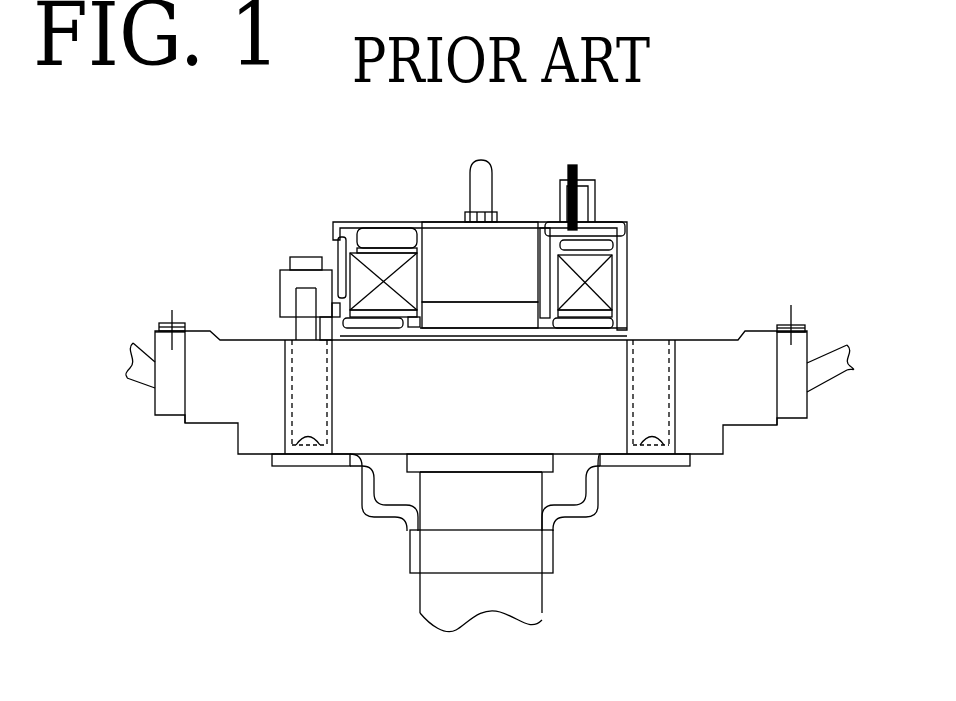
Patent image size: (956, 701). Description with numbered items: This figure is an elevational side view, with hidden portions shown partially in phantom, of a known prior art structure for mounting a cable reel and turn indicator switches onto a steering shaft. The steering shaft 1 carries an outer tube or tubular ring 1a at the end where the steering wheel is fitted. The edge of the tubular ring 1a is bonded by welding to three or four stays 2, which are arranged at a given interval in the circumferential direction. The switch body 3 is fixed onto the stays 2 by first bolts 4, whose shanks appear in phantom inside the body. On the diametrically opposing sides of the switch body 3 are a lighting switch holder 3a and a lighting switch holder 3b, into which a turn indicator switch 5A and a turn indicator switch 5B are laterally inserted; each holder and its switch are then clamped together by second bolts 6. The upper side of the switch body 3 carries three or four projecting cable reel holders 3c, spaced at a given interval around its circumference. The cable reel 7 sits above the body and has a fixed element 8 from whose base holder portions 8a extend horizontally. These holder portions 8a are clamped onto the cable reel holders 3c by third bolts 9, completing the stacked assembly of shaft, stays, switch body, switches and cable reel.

The steering shaft 1 is at (530, 593).
The outer tube (tubular ring) 1a is at (553, 550).
The stays 2 is at (393, 512).
The switch body 3 is at (253, 454).
The lighting switch holder 3a is at (783, 326).
The lighting switch holder 3b is at (158, 330).
The cable reel holders 3c is at (305, 330).
The first bolts 4 is at (660, 433).
The turn indicator switch 5A is at (806, 395).
The turn indicator switch 5B is at (145, 397).
The second bolts 6 is at (487, 318).
The cable reel 7 is at (361, 212).
The fixed element 8 is at (332, 340).
The holder portions 8a is at (323, 257).
The third bolts 9 is at (303, 257).